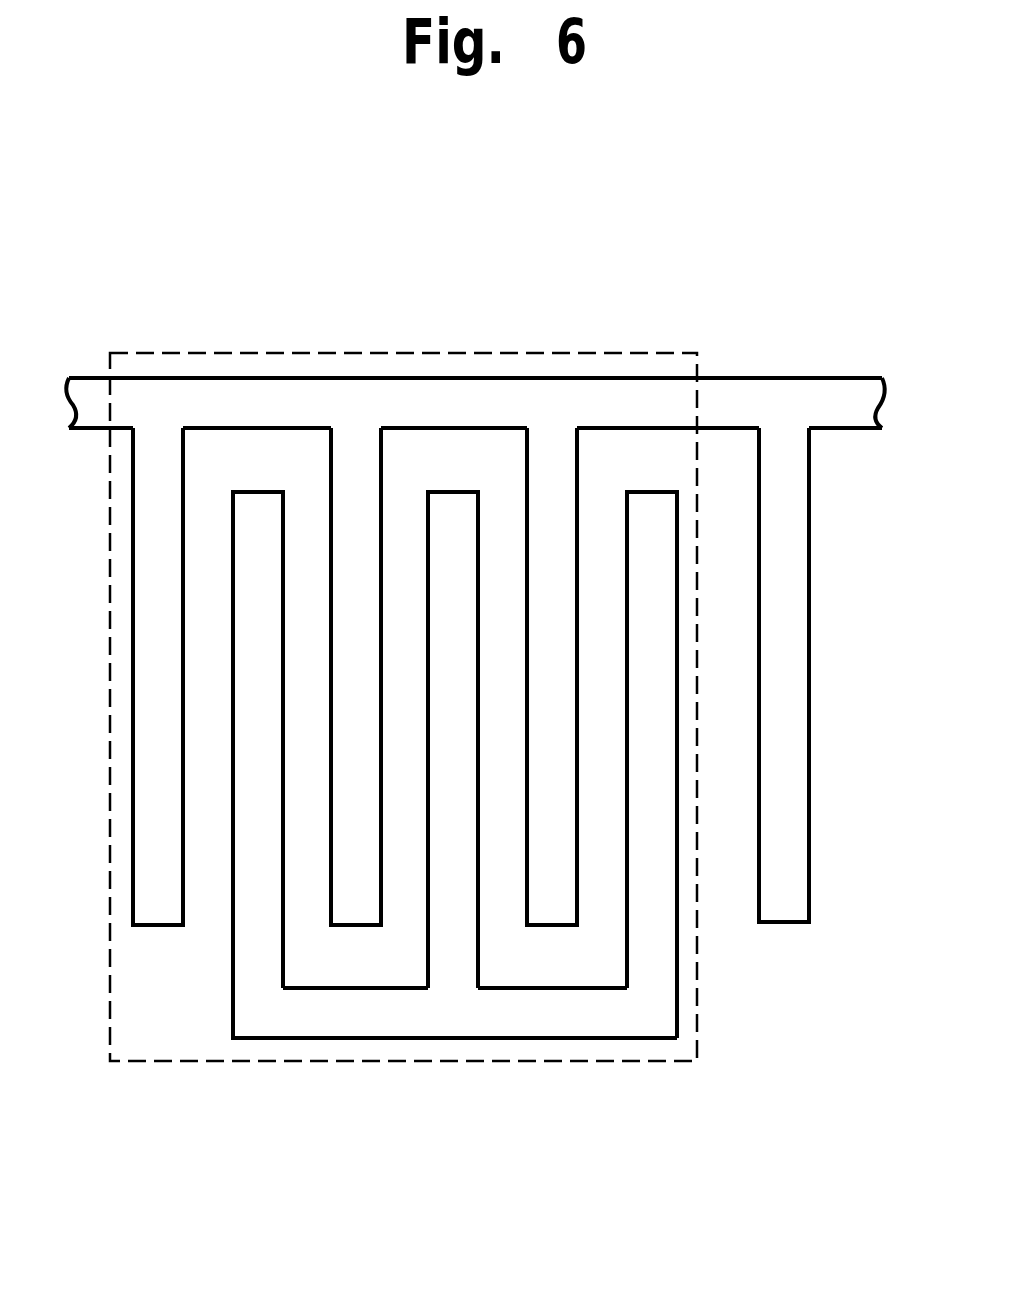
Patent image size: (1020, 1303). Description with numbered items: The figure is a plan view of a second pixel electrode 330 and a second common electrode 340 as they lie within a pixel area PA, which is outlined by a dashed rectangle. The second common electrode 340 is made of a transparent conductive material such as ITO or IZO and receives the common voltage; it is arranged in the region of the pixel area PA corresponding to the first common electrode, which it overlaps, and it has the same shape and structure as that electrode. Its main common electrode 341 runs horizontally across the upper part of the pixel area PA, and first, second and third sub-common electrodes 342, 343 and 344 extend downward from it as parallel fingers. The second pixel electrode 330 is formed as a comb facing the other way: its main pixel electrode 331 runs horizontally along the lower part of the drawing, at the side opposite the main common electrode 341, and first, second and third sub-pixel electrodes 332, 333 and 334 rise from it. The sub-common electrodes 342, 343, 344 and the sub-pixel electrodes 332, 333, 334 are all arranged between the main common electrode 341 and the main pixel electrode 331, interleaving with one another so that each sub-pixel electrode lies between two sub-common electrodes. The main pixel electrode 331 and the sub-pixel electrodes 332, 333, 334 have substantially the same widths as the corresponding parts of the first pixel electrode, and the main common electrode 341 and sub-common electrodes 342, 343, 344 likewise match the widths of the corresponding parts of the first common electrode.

The second pixel electrode 330 is at (625, 1155).
The main pixel electrode 331 is at (382, 1008).
The first sub-pixel electrode 332 is at (258, 963).
The second sub-pixel electrode 333 is at (455, 962).
The third sub-pixel electrode 334 is at (604, 898).
The second common electrode 340 is at (522, 257).
The main common electrode 341 is at (415, 400).
The first sub-common electrode 342 is at (157, 458).
The second sub-common electrode 343 is at (353, 455).
The third sub-common electrode 344 is at (555, 455).
The pixel area PA is at (640, 350).